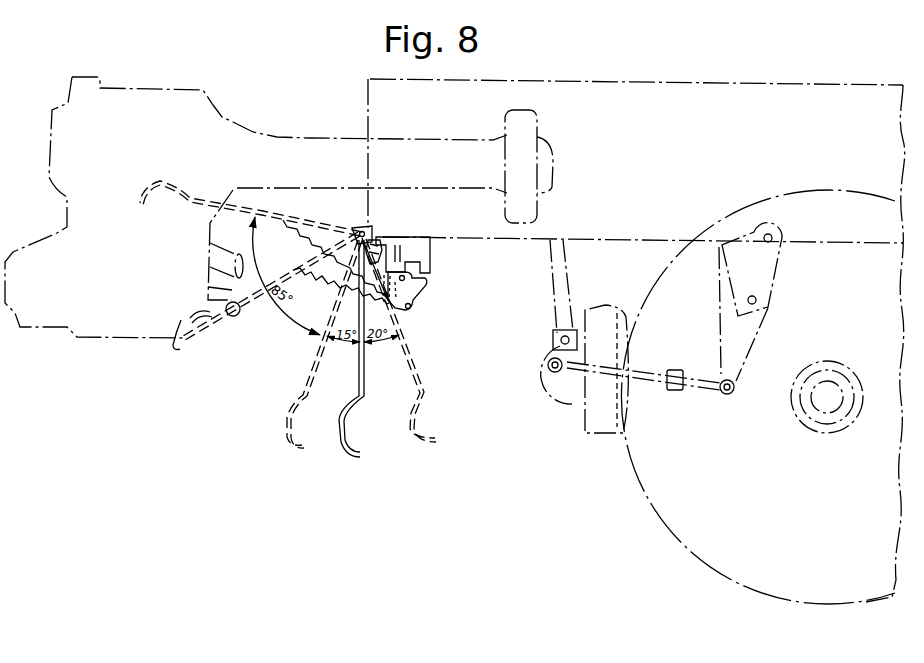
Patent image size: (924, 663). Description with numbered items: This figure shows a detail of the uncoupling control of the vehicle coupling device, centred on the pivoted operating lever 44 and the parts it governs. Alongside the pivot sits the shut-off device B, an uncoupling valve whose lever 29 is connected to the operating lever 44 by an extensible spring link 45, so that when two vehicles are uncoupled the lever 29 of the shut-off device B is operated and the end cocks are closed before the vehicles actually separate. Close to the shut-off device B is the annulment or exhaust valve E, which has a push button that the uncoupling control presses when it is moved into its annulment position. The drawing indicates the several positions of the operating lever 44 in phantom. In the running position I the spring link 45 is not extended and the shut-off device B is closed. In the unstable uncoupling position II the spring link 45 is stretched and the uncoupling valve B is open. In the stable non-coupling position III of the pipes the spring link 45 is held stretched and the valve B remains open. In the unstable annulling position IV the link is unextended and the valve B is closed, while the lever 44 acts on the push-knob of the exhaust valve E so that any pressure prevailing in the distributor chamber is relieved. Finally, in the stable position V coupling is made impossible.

The spring link 45 is at (318, 237).
The operating lever 44 is at (364, 388).
The lever of the shut-off device 29 is at (412, 297).
The shut-off device B is at (412, 257).
The annulment or exhaust valve E is at (376, 240).
The running position I is at (357, 462).
The unstable uncoupling position II is at (176, 356).
The stable non-coupling position III is at (298, 457).
The unstable annulling position IV is at (437, 449).
The stable position V is at (142, 206).